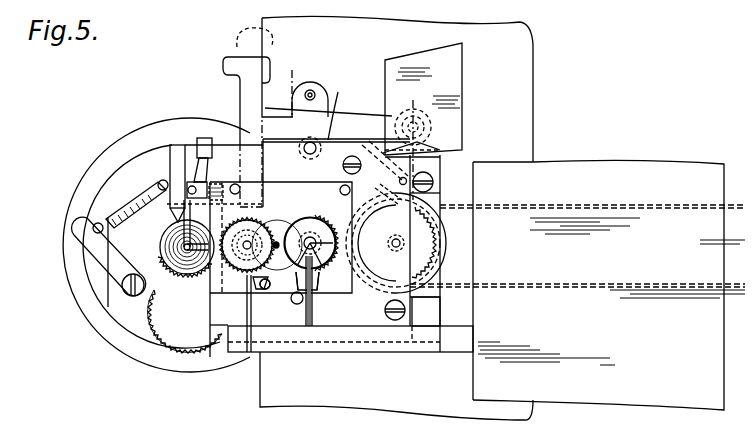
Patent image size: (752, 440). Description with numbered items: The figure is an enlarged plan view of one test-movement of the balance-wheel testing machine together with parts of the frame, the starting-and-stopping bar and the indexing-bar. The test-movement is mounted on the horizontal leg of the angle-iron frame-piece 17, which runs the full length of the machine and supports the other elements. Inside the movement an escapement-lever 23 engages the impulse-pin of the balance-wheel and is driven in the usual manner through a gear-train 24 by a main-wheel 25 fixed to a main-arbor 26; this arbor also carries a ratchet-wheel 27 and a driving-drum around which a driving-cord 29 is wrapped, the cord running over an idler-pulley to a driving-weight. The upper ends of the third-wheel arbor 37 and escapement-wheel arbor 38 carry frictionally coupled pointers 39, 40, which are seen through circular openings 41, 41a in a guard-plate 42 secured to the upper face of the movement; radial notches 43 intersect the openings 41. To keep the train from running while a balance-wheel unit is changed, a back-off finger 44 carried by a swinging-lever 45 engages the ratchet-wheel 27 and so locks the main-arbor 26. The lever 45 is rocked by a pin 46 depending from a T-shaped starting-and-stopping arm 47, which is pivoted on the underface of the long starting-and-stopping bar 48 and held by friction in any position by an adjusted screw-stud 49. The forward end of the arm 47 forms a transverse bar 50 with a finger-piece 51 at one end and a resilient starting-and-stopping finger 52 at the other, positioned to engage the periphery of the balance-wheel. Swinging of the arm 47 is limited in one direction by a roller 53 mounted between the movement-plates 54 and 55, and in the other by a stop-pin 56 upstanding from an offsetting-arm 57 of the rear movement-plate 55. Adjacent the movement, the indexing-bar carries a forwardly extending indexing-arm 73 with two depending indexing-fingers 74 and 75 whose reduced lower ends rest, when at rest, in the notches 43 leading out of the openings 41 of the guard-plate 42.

The angle-iron frame-piece 17 is at (354, 402).
The escapement-lever 23 is at (210, 272).
The gear-train 24 is at (297, 233).
The main-wheel 25 is at (437, 257).
The main-arbor 26 is at (397, 248).
The ratchet-wheel 27 is at (447, 237).
The driving-cord 29 is at (468, 284).
The third-wheel arbor 37 is at (308, 258).
The escapement-wheel arbor 38 is at (249, 243).
The pointer 39 is at (314, 250).
The pointer 40 is at (272, 240).
The circular opening 41 is at (300, 291).
The circular opening 41a is at (258, 284).
The guard-plate 42 is at (213, 300).
The radial notch 43 is at (245, 278).
The back-off finger 44 is at (384, 190).
The swinging-lever 45 is at (375, 156).
The pin 46 is at (441, 146).
The starting-and-stopping arm 47 is at (268, 128).
The starting-and-stopping bar 48 is at (435, 58).
The screw-stud 49 is at (414, 112).
The transverse bar 50 is at (240, 107).
The finger-piece 51 is at (230, 72).
The starting-and-stopping finger 52 is at (230, 200).
The roller 53 is at (340, 107).
The movement-plate 54 is at (305, 143).
The rear movement-plate 55 is at (433, 312).
The stop-pin 56 is at (314, 90).
The offsetting-arm 57 is at (309, 90).
The indexing-arm 73 is at (370, 352).
The indexing-finger 74 is at (253, 355).
The indexing-finger 75 is at (318, 352).